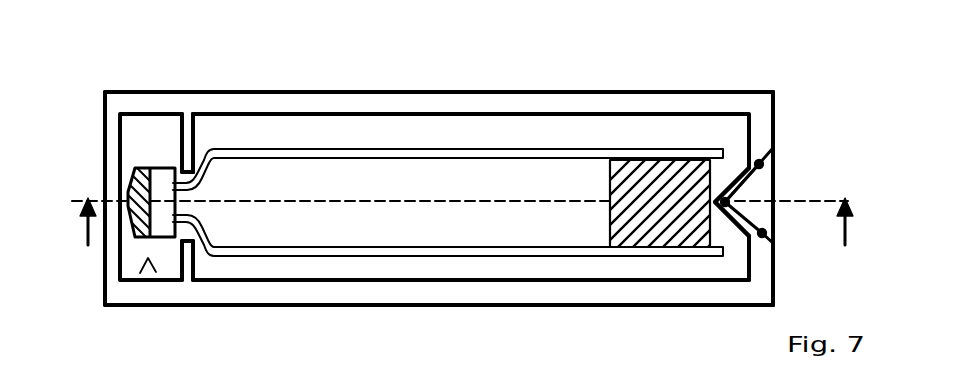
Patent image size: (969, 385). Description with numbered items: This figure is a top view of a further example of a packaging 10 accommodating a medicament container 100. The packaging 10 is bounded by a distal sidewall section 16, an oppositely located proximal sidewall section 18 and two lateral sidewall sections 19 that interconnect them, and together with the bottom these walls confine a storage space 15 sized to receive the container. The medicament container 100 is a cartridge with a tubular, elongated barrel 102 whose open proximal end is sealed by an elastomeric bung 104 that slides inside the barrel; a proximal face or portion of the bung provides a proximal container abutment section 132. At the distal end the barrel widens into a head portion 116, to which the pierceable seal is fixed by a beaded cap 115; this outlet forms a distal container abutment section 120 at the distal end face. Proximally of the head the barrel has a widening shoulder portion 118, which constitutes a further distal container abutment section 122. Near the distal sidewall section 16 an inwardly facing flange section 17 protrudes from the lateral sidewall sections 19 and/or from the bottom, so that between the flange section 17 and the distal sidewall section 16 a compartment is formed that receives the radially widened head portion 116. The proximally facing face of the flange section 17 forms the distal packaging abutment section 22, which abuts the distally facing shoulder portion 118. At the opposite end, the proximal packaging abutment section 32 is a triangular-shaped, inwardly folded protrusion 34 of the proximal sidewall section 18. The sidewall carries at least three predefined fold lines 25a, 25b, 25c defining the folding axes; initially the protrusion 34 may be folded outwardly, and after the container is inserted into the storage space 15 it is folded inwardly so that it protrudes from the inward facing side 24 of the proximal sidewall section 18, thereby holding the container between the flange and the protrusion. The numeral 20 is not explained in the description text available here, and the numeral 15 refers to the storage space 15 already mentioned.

The packaging 10 is at (272, 75).
The storage space 15 is at (346, 132).
The distal sidewall section 16 is at (105, 162).
The flange section 17 is at (182, 132).
The proximal sidewall section 18 is at (757, 118).
The lateral sidewall sections 19 is at (475, 102).
The inner housing 20 is at (123, 129).
The distal packaging abutment section 22 is at (194, 147).
The inward facing side 24 is at (750, 262).
The fold line 25a is at (761, 164).
The fold line 25b is at (727, 202).
The fold line 25c is at (763, 234).
The proximal packaging abutment section 32 is at (712, 203).
The protrusion 34 is at (745, 185).
The medicament container 100 is at (586, 132).
The barrel 102 is at (513, 152).
The bung 104 is at (657, 175).
The beaded cap 115 is at (163, 238).
The head portion 116 is at (148, 262).
The shoulder portion 118 is at (205, 246).
The distal container abutment section 120 is at (128, 186).
The distal container abutment section 122 is at (205, 158).
The proximal container abutment section 132 is at (748, 190).